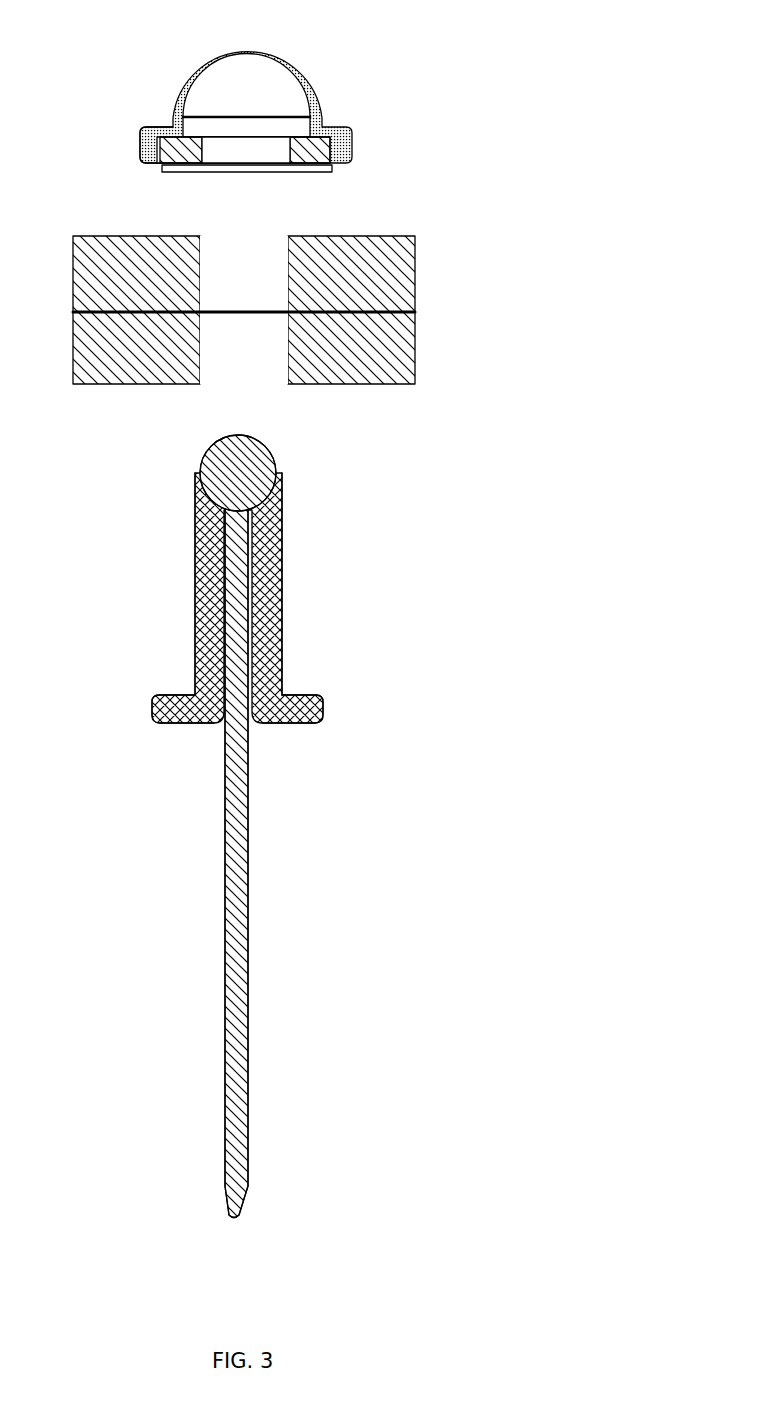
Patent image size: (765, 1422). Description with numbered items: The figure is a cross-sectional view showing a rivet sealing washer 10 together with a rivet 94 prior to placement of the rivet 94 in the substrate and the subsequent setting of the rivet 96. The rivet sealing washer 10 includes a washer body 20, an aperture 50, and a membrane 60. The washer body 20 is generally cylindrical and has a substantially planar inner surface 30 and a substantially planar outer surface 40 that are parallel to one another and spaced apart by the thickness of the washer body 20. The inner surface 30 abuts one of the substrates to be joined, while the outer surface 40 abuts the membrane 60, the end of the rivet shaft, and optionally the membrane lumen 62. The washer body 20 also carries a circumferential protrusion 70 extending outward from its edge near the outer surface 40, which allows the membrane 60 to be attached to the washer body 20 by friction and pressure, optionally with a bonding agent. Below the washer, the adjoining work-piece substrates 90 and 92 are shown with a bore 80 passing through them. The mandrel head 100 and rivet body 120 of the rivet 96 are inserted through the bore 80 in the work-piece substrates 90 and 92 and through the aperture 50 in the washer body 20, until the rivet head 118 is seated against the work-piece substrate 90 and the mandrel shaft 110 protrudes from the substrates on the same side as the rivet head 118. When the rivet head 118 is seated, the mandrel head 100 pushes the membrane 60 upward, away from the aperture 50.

The rivet sealing washer 10 is at (345, 68).
The washer body 20 is at (312, 148).
The inner surface 30 is at (193, 167).
The outer surface 40 is at (172, 145).
The aperture 50 is at (238, 153).
The membrane 60 is at (296, 58).
The membrane lumen 62 is at (220, 84).
The circumferential protrusion 70 is at (148, 140).
The bore 80 is at (237, 352).
The work-piece substrate 90 is at (105, 375).
The work-piece substrate 92 is at (393, 282).
The rivet 94 is at (252, 309).
The rivet 96 is at (357, 603).
The mandrel head 100 is at (258, 462).
The mandrel shaft 110 is at (247, 868).
The rivet head 118 is at (157, 714).
The rivet body 120 is at (205, 612).